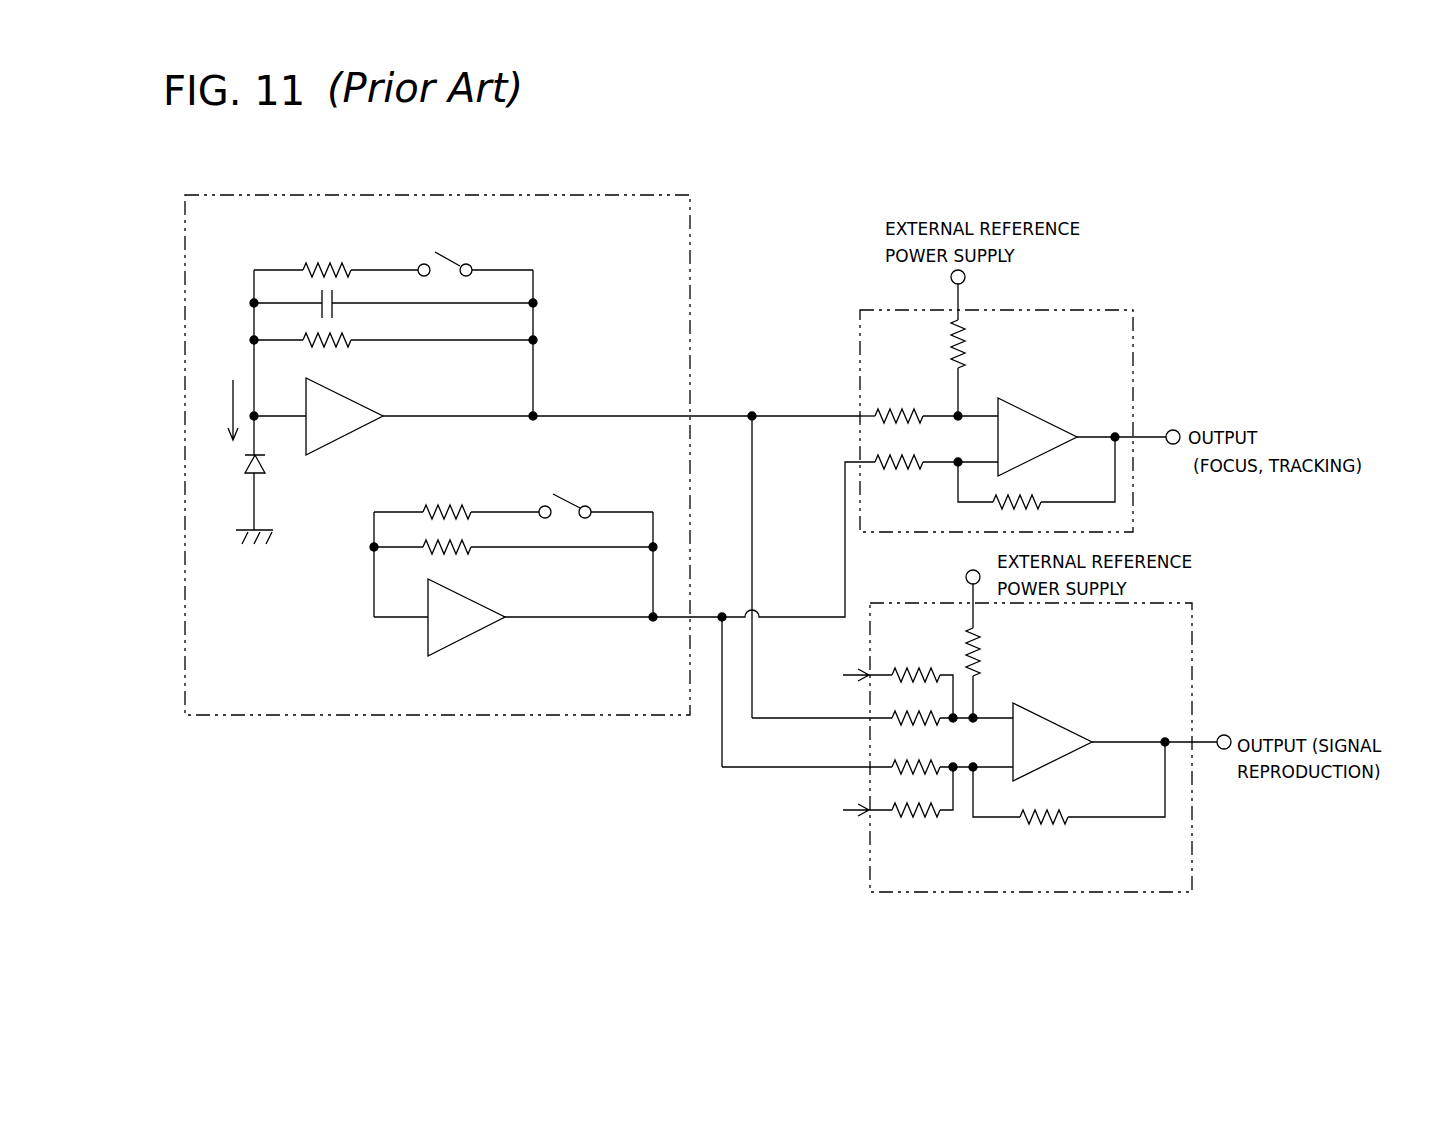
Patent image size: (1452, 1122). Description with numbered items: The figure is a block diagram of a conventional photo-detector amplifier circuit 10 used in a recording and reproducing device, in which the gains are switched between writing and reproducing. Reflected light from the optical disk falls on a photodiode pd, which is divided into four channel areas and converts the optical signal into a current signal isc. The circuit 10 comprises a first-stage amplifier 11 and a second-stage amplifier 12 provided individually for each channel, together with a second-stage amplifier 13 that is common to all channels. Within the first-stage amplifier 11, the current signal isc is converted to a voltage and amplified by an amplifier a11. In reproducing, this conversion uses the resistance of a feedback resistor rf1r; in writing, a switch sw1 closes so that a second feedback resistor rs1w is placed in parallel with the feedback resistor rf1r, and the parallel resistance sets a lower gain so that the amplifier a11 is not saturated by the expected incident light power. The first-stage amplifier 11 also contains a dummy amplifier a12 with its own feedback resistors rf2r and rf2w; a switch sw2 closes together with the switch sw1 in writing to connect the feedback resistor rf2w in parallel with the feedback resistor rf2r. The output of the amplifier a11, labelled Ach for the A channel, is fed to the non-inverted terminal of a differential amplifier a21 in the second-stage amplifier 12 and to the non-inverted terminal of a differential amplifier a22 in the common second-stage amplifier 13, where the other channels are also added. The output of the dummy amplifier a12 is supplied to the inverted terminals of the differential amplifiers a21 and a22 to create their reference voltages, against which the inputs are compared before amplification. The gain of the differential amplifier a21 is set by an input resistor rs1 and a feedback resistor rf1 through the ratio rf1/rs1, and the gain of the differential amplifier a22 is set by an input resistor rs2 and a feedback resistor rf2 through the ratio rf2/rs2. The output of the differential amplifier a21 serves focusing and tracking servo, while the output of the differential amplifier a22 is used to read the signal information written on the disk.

The photo-detector amplifier circuit 10 is at (241, 190).
The first-stage amplifier 11 is at (694, 250).
The second-stage amplifier 12 is at (1135, 353).
The second-stage amplifier 13 is at (1195, 646).
The current signal isc is at (217, 410).
The photodiode pd is at (246, 478).
The write-mode feedback resistor rs1w is at (316, 268).
The switch sw1 is at (446, 262).
The feedback resistor rf1r is at (325, 347).
The amplifier a11 is at (338, 428).
The feedback resistor rf2w is at (435, 510).
The switch sw2 is at (568, 505).
The feedback resistor rf2r is at (445, 553).
The dummy amplifier a12 is at (455, 636).
The A channel signal line Ach is at (725, 579).
The feedback resistor rf1 is at (965, 340).
The input resistor rs1 is at (880, 412).
The differential amplifier a21 is at (1037, 430).
The feedback resistor rf2 is at (980, 652).
The input resistor rs2 is at (921, 717).
The differential amplifier a22 is at (1062, 738).